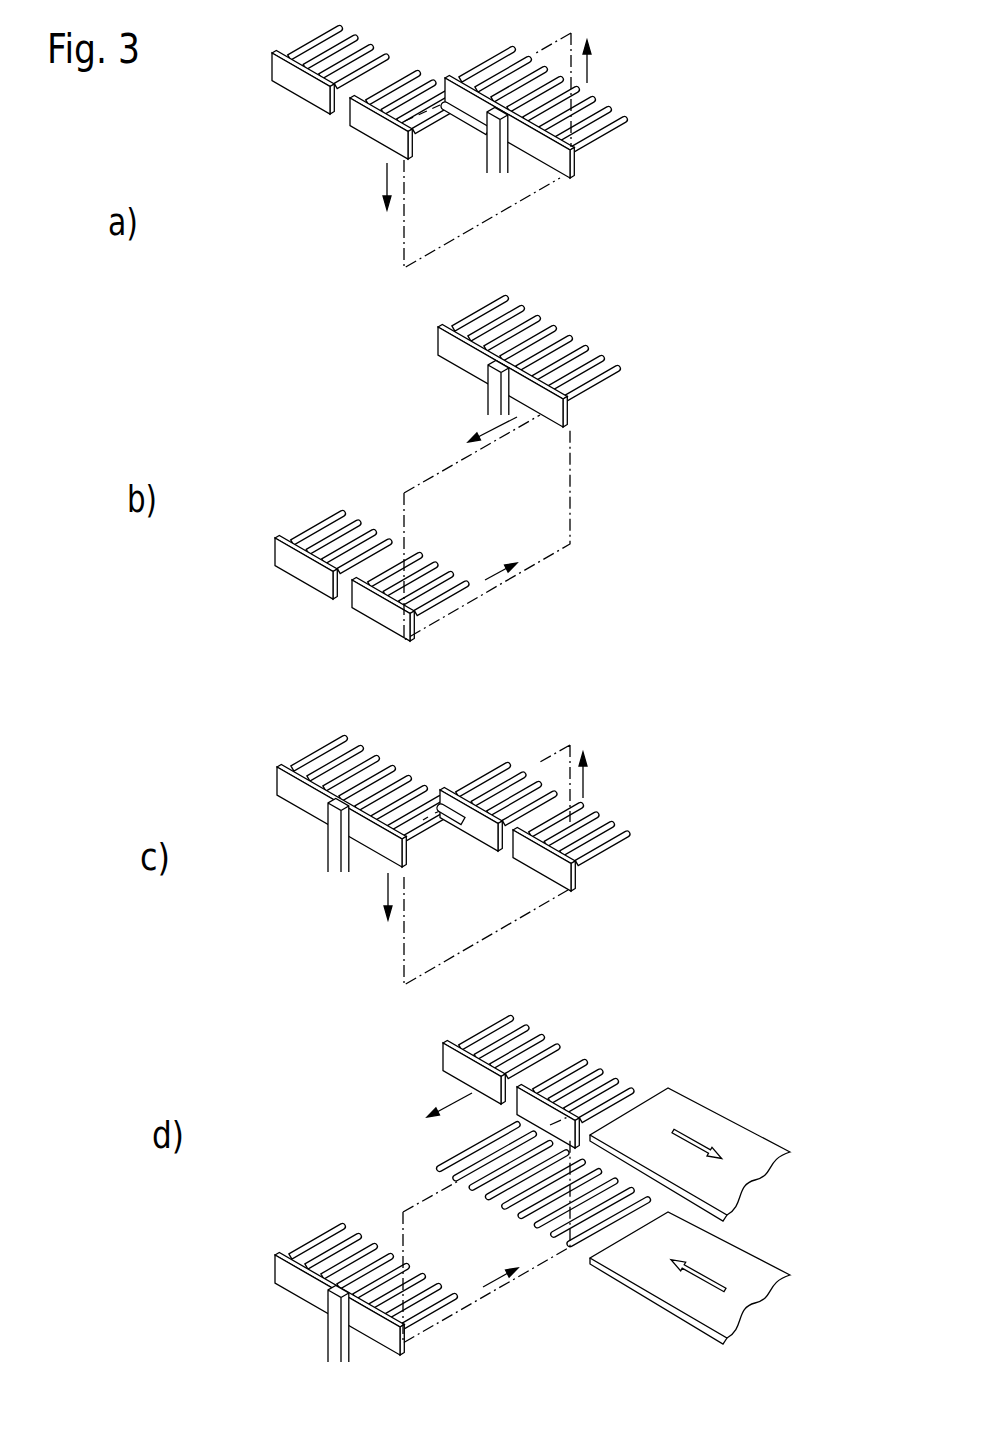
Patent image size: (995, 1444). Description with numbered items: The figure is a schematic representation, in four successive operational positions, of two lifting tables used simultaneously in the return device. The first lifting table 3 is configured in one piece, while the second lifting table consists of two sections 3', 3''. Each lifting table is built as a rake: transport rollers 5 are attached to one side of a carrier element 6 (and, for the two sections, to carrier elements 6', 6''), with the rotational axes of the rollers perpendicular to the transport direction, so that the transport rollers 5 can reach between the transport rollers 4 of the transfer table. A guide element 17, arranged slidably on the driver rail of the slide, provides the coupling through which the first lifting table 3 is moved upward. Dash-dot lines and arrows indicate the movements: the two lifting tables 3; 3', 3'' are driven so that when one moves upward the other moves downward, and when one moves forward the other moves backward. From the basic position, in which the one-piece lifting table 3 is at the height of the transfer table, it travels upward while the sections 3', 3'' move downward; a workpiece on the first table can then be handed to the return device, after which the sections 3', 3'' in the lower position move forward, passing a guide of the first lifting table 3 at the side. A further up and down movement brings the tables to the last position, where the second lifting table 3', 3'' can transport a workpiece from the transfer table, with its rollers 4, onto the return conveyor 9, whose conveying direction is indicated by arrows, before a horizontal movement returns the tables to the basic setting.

The lifting table 3 is at (531, 136).
The section of second lifting table 3' is at (292, 80).
The section of second lifting table 3'' is at (388, 133).
The guide element 17 is at (492, 142).
The transport rollers 5 is at (532, 308).
The carrier element 6 is at (467, 386).
The carrier element 6' is at (308, 565).
The carrier element 6'' is at (391, 612).
The transport rollers 4 is at (453, 1157).
The return conveyor 9 is at (686, 1108).